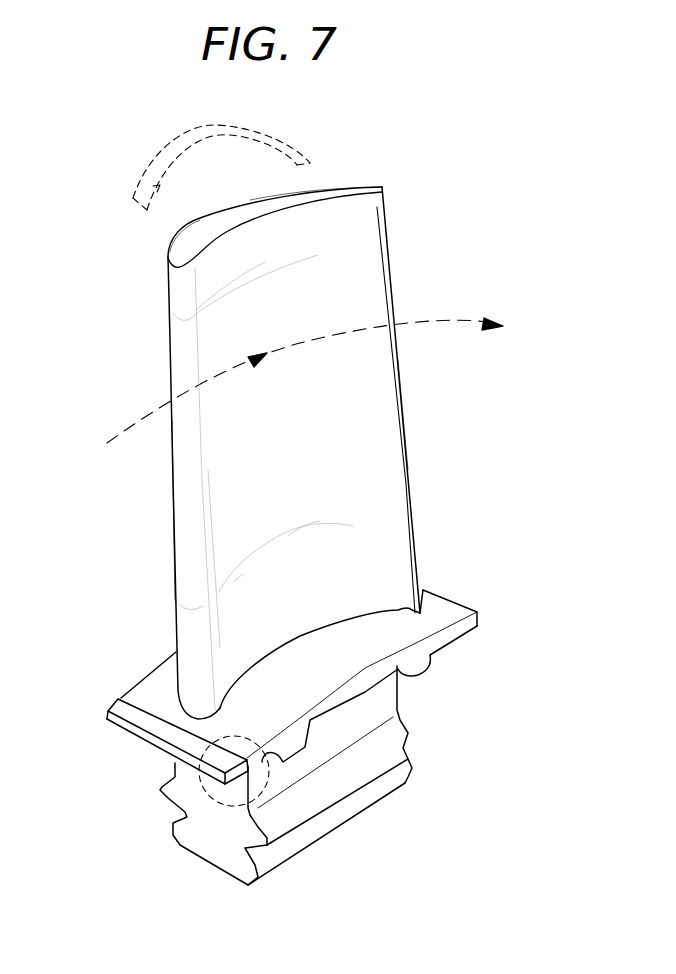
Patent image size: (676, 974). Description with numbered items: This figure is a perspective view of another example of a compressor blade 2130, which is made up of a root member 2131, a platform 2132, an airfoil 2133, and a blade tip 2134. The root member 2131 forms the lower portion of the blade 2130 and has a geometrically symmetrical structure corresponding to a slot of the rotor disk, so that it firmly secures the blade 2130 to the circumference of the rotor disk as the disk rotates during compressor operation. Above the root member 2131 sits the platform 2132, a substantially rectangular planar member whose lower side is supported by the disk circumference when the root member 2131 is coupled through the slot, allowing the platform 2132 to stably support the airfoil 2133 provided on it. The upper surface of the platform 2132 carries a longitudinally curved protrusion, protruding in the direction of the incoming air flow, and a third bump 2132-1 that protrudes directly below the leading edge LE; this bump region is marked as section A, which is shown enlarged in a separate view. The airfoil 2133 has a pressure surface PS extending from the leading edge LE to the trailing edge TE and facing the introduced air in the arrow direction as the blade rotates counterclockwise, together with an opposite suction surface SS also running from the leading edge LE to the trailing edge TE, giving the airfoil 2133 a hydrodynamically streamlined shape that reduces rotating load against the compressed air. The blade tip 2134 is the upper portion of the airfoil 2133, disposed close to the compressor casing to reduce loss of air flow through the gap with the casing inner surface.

The blade 2130 is at (427, 107).
The root member 2131 is at (212, 840).
The platform 2132 is at (390, 632).
The third bump 2132-1 is at (128, 700).
The airfoil 2133 is at (430, 457).
The blade tip 2134 is at (195, 242).
The suction surface SS is at (340, 189).
The pressure surface PS is at (310, 447).
The leading edge LE is at (174, 496).
The trailing edge TE is at (403, 398).
The section A is at (178, 805).